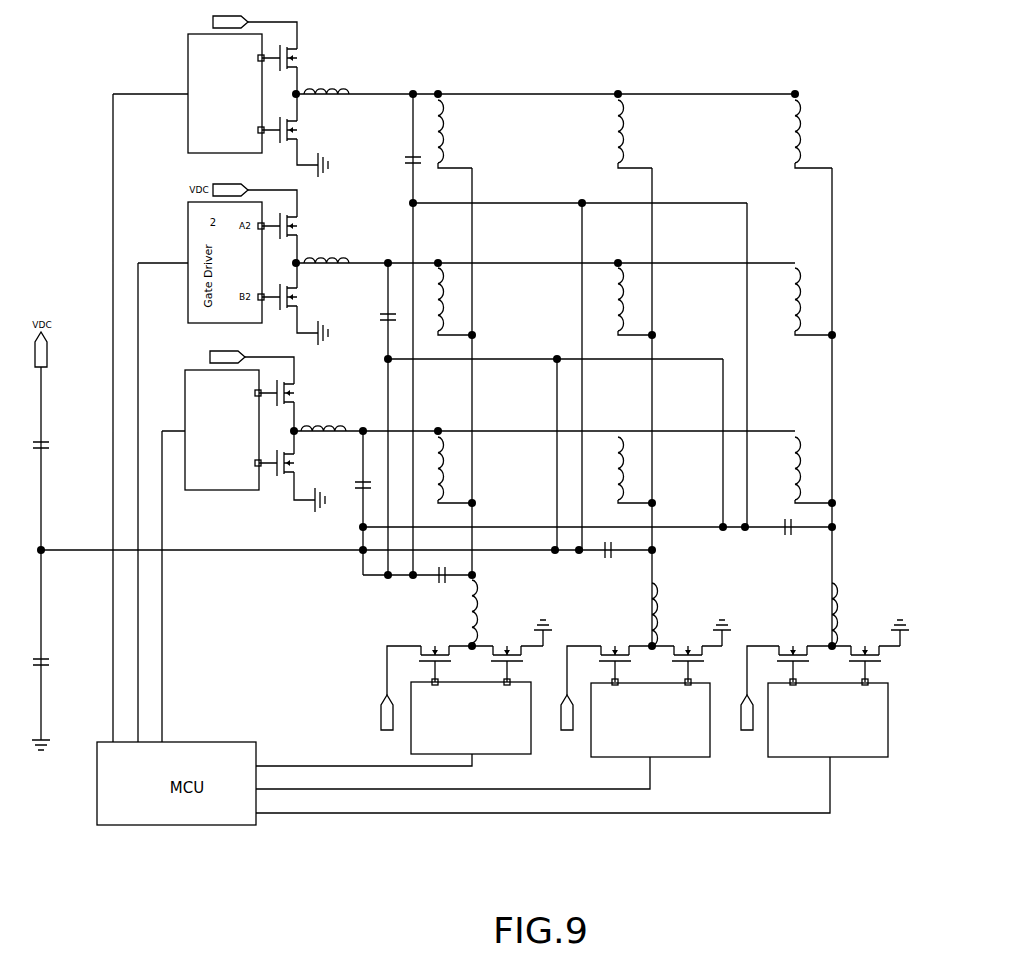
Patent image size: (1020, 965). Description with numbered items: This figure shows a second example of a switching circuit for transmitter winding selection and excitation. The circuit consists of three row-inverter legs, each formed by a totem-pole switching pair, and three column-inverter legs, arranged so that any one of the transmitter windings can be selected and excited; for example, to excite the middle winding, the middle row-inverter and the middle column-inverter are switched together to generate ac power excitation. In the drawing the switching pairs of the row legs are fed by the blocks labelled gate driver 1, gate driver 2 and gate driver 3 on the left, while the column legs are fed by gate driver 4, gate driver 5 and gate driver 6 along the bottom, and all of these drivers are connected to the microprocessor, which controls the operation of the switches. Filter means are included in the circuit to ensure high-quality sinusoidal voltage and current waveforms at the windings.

The gate driver 1 is at (258, 96).
The inductor coil 2 is at (571, 363).
The gate driver 3 is at (255, 431).
The gate driver 4 is at (464, 687).
The gate driver 5 is at (644, 688).
The gate driver 6 is at (823, 688).